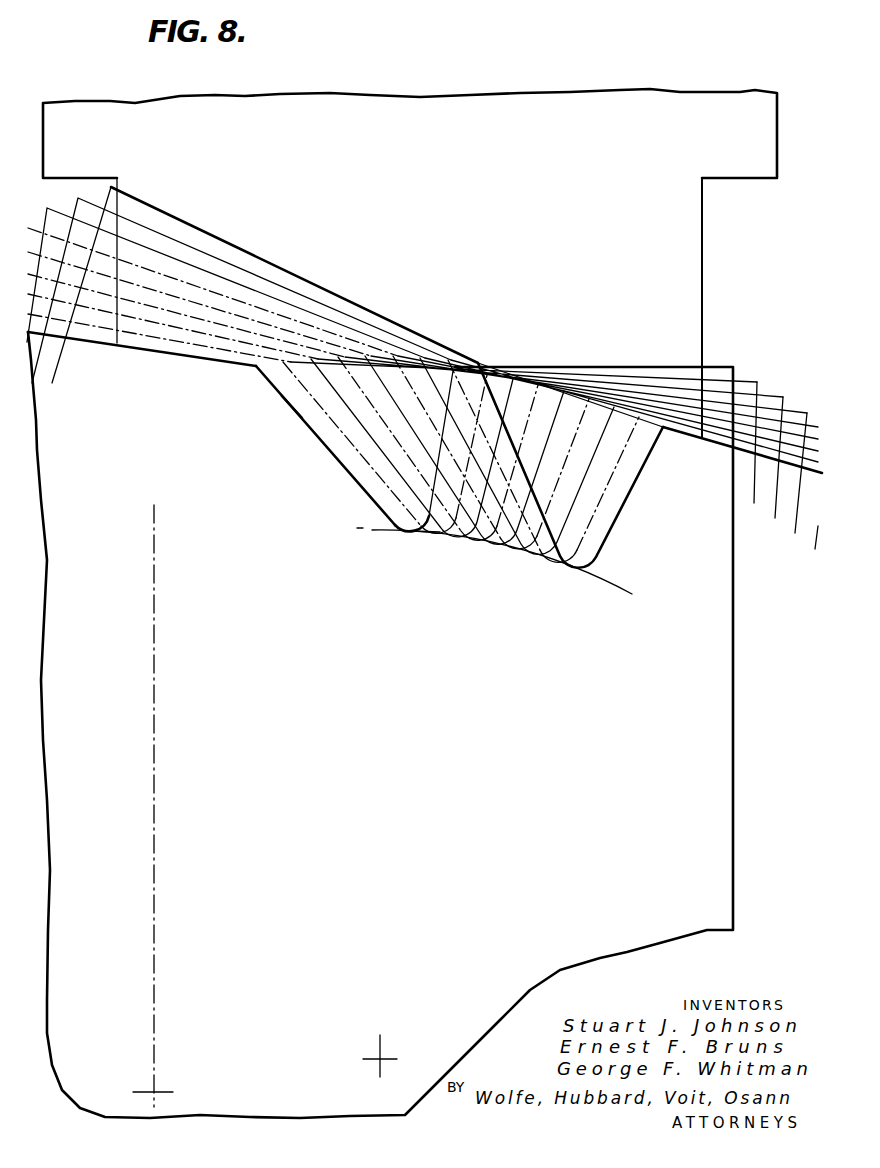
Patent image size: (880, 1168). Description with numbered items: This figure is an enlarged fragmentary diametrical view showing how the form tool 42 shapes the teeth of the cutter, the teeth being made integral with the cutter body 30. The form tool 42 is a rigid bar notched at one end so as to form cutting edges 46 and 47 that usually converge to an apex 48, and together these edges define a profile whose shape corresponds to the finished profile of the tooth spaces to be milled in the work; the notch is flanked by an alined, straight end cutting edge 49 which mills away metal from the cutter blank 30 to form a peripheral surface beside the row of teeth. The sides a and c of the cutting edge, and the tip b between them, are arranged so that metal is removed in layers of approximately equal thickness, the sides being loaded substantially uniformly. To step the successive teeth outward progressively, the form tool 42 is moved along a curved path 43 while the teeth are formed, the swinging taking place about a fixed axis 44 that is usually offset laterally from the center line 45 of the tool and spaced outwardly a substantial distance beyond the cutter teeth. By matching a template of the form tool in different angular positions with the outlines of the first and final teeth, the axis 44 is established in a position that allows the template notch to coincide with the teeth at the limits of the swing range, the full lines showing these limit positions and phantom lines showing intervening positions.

The cutter body 30 is at (571, 101).
The form tool 42 is at (714, 790).
The curved path 43 is at (606, 585).
The fixed axis 44 is at (383, 1056).
The center line 45 is at (155, 770).
The cutting edge 46 is at (337, 455).
The cutting edge 47 is at (453, 385).
The apex 48 is at (403, 528).
The end cutting edge 49 is at (606, 372).
The side of cutting edge a is at (296, 418).
The tip of cutting edge b is at (428, 530).
The side of cutting edge c is at (447, 401).